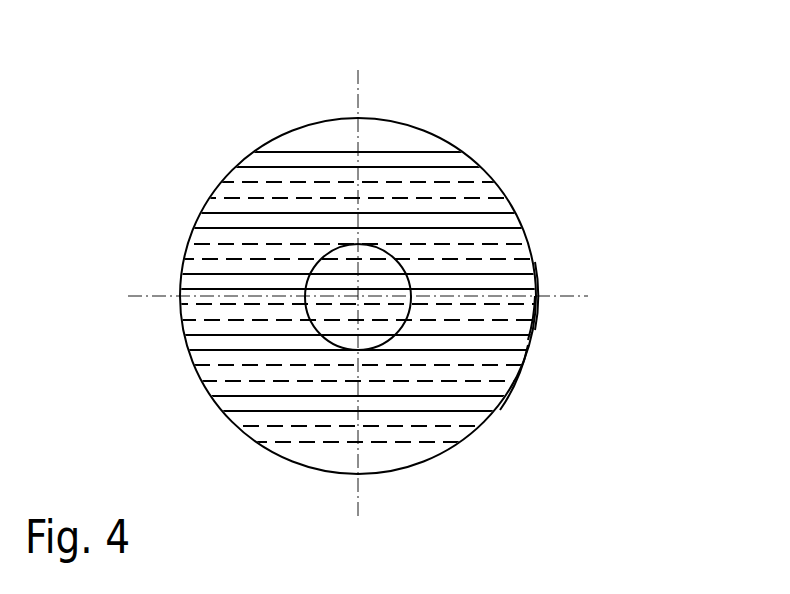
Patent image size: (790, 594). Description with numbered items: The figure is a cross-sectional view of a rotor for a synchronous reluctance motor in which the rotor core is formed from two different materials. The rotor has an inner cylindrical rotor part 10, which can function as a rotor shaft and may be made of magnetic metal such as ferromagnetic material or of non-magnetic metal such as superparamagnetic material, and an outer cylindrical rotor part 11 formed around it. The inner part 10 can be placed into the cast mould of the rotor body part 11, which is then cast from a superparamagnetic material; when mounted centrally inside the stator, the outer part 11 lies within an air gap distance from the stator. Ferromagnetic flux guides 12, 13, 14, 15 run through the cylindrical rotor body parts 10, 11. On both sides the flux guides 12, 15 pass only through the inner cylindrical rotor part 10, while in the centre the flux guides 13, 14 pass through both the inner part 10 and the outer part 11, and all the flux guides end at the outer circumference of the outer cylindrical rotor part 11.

The inner cylindrical rotor part 10 is at (405, 264).
The outer cylindrical rotor part 11 is at (421, 129).
The ferromagnetic flux guide 12 is at (465, 160).
The ferromagnetic flux guide 13 is at (537, 280).
The ferromagnetic flux guide 14 is at (537, 312).
The ferromagnetic flux guide 15 is at (508, 376).